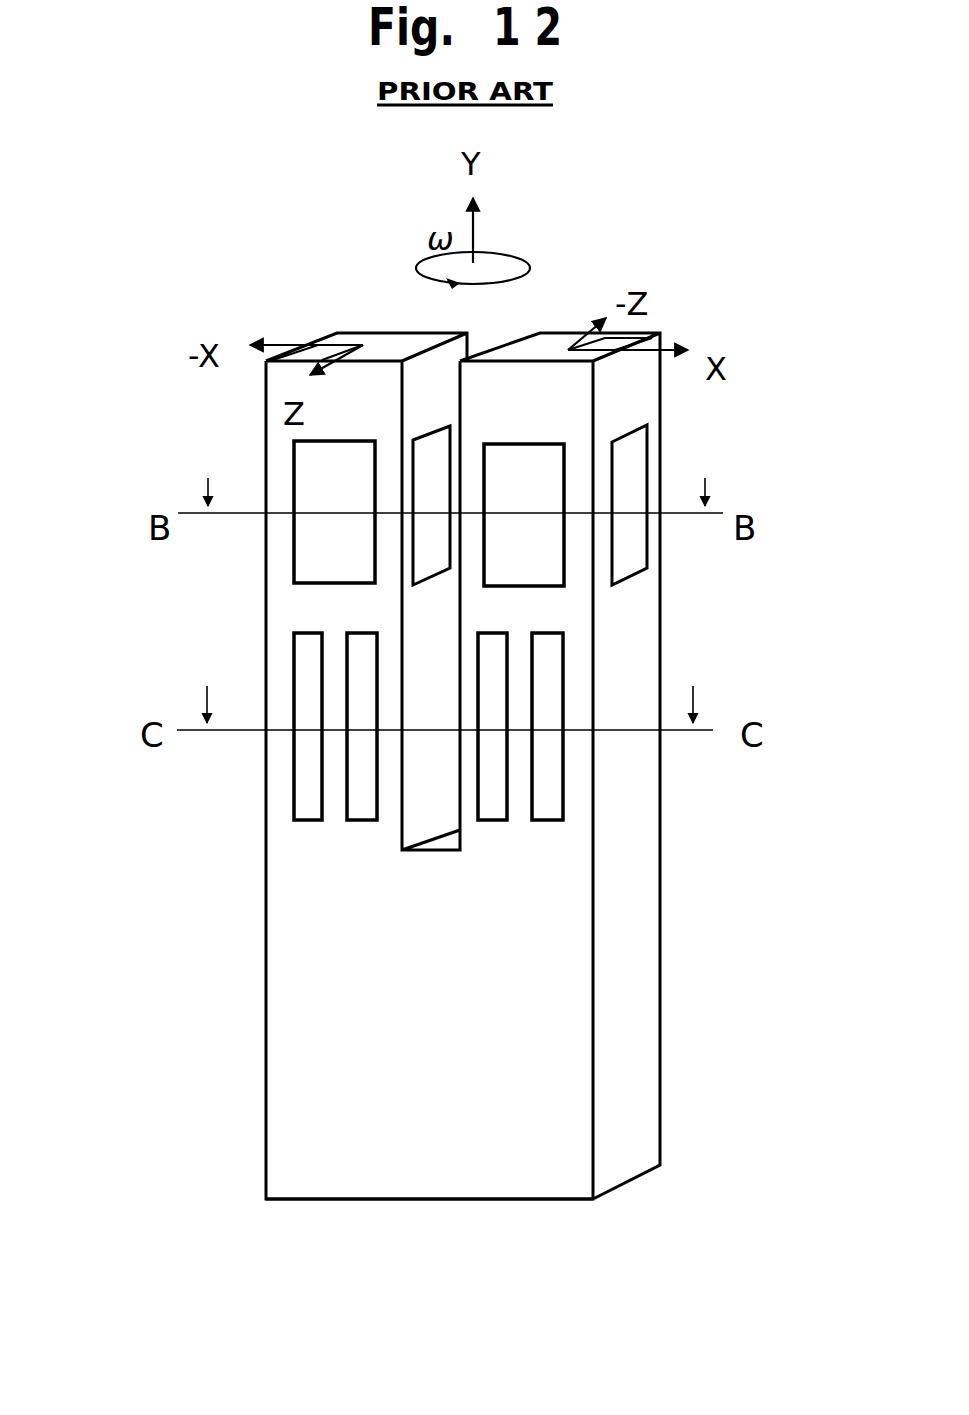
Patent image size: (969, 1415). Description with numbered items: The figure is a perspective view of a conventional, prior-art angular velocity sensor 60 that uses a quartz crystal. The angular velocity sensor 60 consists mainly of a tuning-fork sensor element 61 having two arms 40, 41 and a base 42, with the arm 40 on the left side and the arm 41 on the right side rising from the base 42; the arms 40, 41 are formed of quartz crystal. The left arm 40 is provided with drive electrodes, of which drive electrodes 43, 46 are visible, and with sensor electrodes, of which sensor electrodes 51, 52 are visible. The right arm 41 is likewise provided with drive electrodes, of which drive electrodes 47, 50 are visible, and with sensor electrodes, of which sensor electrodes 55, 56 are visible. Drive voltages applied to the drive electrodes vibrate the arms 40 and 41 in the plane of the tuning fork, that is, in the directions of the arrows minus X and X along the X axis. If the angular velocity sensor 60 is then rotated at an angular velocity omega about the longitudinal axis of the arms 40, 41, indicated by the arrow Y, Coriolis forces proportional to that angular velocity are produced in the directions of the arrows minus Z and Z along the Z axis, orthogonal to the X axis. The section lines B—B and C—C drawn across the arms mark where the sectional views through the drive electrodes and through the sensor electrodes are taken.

The arm 40 is at (292, 608).
The arm 41 is at (578, 647).
The base 42 is at (480, 1032).
The drive electrode 43 is at (308, 462).
The drive electrode 46 is at (433, 450).
The drive electrode 47 is at (547, 563).
The drive electrode 50 is at (632, 462).
The sensor electrode 51 is at (312, 792).
The sensor electrode 52 is at (363, 807).
The sensor electrode 55 is at (493, 803).
The sensor electrode 56 is at (550, 800).
The angular velocity sensor 60 is at (724, 302).
The tuning-fork sensor element 61 is at (440, 1202).